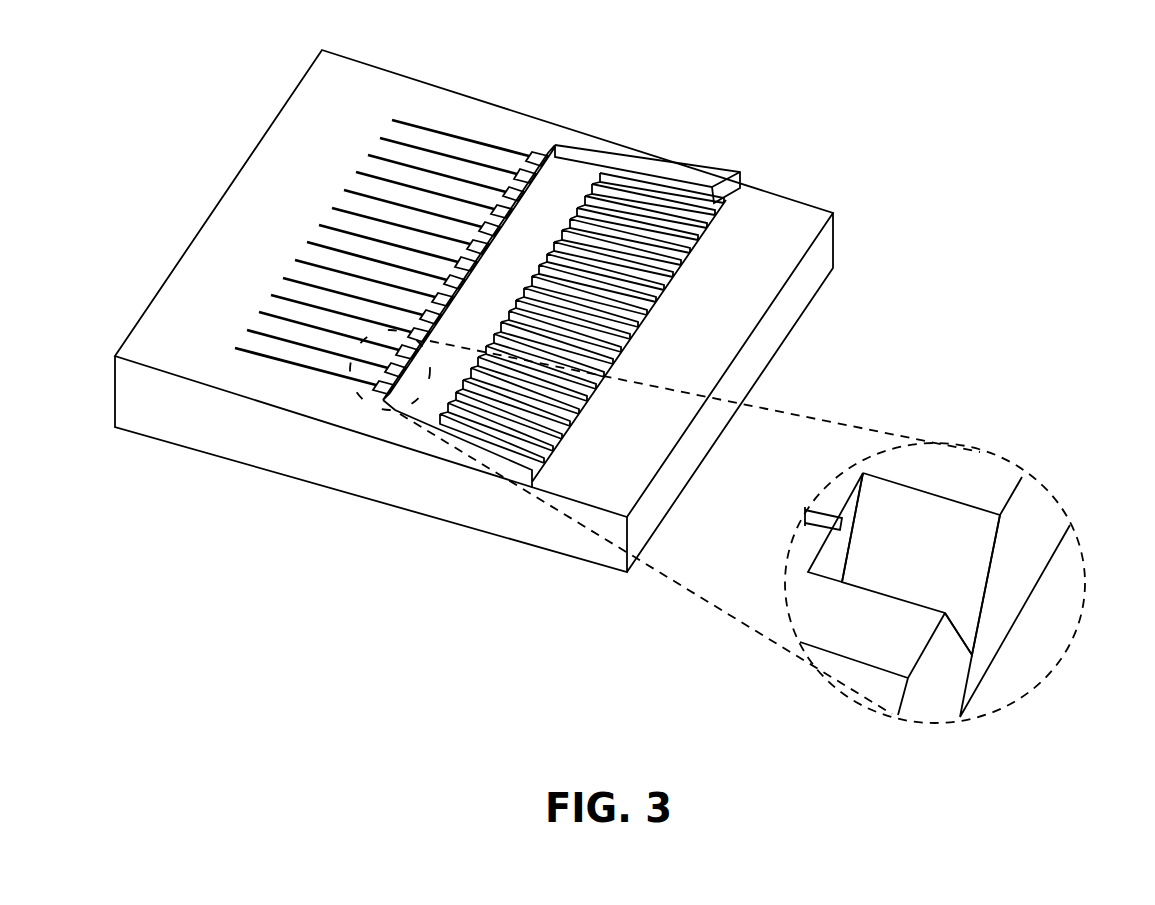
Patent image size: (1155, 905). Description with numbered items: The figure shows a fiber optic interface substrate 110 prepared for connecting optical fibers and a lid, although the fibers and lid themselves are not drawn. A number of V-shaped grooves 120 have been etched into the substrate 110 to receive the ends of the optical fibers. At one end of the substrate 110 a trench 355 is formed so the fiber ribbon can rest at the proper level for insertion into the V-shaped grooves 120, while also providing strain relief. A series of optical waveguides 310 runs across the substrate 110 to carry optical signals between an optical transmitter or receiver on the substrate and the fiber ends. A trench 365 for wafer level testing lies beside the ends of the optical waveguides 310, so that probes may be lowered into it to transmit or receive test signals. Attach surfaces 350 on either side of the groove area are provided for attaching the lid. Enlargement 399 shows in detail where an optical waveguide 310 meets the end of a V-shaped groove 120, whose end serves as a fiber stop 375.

The substrate 110 is at (826, 261).
The V-shaped grooves 120 is at (685, 205).
The optical waveguides 310 is at (440, 158).
The attach surfaces 350 is at (640, 150).
The trench 355 is at (767, 215).
The trench for wafer level testing 365 is at (540, 215).
The fiber stop 375 is at (835, 552).
The enlargement 399 is at (985, 457).